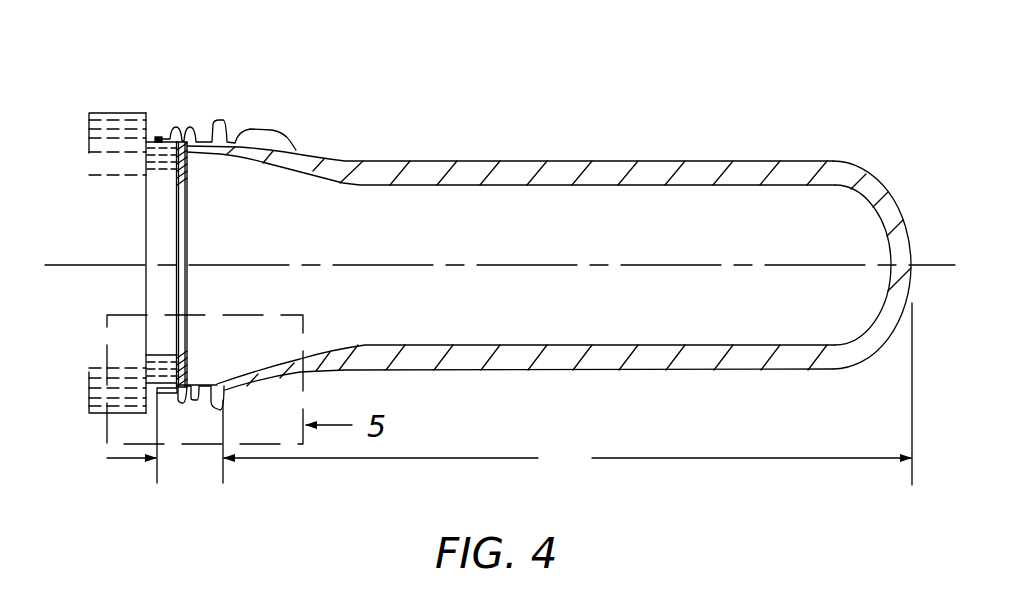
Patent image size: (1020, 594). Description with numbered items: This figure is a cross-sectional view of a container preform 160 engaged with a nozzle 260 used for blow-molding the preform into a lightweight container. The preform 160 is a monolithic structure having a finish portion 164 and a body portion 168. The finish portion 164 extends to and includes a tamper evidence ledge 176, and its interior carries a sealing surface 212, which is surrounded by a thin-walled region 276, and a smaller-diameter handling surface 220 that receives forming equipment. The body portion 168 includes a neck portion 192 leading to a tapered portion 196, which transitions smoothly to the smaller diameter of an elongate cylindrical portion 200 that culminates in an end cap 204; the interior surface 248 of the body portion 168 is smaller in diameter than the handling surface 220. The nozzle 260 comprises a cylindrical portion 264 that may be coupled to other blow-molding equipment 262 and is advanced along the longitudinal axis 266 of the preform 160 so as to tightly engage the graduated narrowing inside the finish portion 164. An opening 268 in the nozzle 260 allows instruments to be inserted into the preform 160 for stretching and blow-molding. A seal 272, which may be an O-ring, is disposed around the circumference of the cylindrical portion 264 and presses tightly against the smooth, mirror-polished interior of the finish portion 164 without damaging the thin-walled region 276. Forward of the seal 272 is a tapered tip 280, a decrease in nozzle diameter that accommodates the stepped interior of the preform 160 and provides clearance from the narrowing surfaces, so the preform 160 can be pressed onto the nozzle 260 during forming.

The preform 160 is at (508, 217).
The finish portion 164 is at (165, 438).
The body portion 168 is at (568, 394).
The tamper evidence ledge 176 is at (221, 121).
The neck portion 192 is at (237, 143).
The tapered portion 196 is at (312, 373).
The cylindrical portion 200 is at (658, 371).
The end cap 204 is at (911, 265).
The sealing surface 212 is at (153, 140).
The handling surface 220 is at (205, 374).
The interior surface 248 is at (536, 232).
The nozzle 260 is at (170, 242).
The blow-molding equipment 262 is at (107, 113).
The cylindrical portion 264 is at (162, 285).
The longitudinal axis 266 is at (738, 265).
The opening 268 is at (235, 264).
The seal 272 is at (179, 187).
The thin-walled region 276 is at (163, 140).
The tapered tip 280 is at (186, 204).